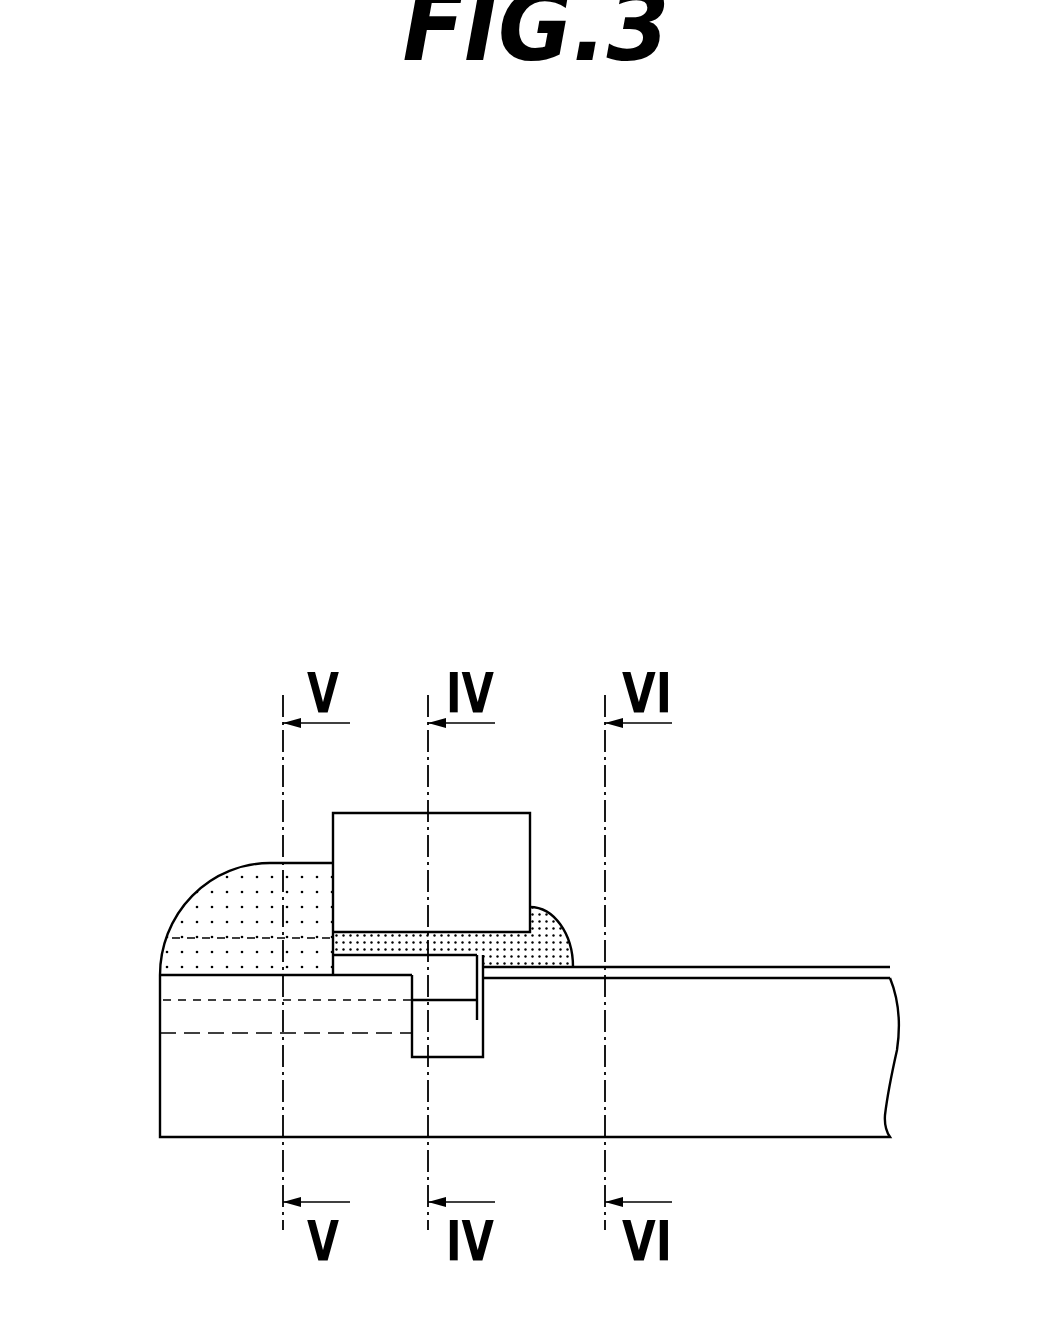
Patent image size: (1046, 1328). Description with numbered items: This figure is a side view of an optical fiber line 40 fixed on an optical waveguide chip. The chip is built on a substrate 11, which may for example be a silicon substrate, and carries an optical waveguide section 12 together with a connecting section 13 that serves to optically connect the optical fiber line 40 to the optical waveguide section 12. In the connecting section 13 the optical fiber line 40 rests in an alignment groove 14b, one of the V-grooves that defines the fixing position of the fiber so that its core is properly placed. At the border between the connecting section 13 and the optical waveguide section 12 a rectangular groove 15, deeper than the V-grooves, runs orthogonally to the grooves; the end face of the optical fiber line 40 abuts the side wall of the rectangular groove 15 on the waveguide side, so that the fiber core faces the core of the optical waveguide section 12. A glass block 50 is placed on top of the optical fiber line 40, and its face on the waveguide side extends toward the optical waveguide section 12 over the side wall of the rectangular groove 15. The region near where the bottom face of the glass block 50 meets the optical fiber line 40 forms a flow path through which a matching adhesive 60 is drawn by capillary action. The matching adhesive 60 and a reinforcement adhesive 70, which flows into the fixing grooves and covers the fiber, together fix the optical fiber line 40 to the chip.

The substrate 11 is at (770, 1138).
The optical waveguide section 12 is at (772, 967).
The connecting section 13 is at (187, 973).
The alignment groove 14b is at (197, 1033).
The rectangular groove 15 is at (462, 1058).
The optical fiber line 40 is at (190, 938).
The glass block 50 is at (510, 813).
The matching adhesive 60 is at (542, 912).
The reinforcement adhesive 70 is at (230, 903).